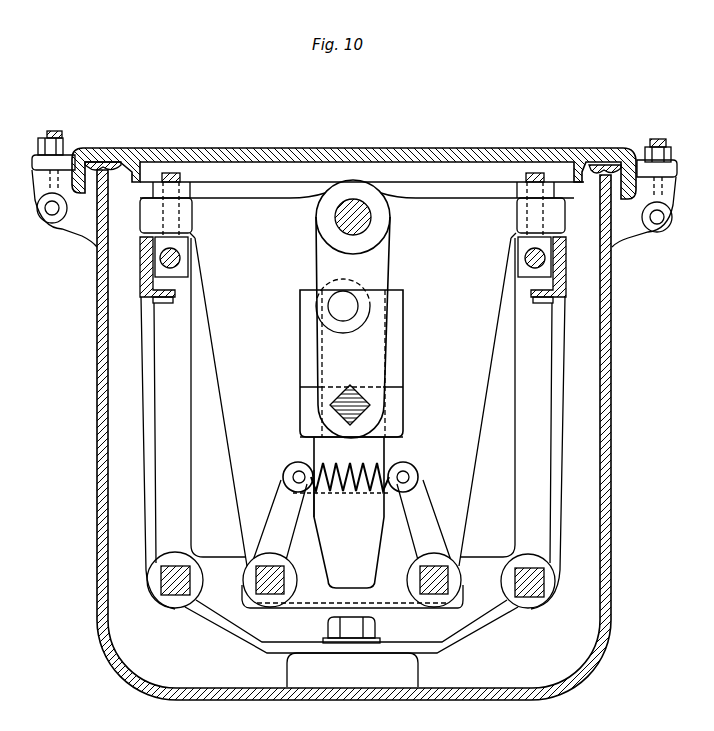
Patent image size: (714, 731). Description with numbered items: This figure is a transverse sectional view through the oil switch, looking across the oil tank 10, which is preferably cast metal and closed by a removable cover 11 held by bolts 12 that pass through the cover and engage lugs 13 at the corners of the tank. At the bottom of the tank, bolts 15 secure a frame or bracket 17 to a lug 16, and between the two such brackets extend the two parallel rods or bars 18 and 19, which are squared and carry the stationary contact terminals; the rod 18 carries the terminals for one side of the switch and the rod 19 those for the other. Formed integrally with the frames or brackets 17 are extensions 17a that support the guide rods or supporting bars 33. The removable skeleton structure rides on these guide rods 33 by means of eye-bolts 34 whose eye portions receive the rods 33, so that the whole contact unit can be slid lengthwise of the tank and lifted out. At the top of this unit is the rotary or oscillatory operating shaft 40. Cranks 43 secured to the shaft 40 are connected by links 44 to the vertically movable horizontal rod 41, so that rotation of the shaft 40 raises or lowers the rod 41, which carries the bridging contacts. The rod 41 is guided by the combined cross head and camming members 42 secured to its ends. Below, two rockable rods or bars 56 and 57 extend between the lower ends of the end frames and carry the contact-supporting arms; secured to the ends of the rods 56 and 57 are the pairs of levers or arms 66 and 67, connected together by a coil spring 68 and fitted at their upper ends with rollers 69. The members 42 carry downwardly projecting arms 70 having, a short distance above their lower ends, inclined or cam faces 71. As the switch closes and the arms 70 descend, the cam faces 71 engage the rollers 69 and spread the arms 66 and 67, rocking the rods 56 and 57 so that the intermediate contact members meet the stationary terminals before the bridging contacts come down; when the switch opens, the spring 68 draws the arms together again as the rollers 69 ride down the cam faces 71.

The oil tank 10 is at (611, 520).
The removable cover 11 is at (137, 153).
The bolts 12 is at (55, 131).
The lugs 13 is at (33, 172).
The bolts 15 is at (373, 631).
The lugs 16 is at (289, 668).
The frames or brackets 17 is at (459, 643).
The extensions 17a is at (152, 396).
The rod or bar 18 is at (172, 590).
The rod or bar 19 is at (538, 598).
The guide rods or supporting bars 33 is at (160, 258).
The eye-bolts 34 is at (178, 178).
The operating shaft 40 is at (338, 221).
The vertically movable horizontal rod 41 is at (372, 405).
The members 42 is at (395, 427).
The cranks 43 is at (377, 270).
The links 44 is at (370, 363).
The rod or bar 56 is at (258, 577).
The rod or bar 57 is at (445, 575).
The levers or arms 66 is at (272, 523).
The levers or arms 67 is at (435, 527).
The coil spring 68 is at (349, 493).
The rollers 69 is at (294, 464).
The arms 70 is at (376, 545).
The inclined or cam faces 71 is at (322, 537).